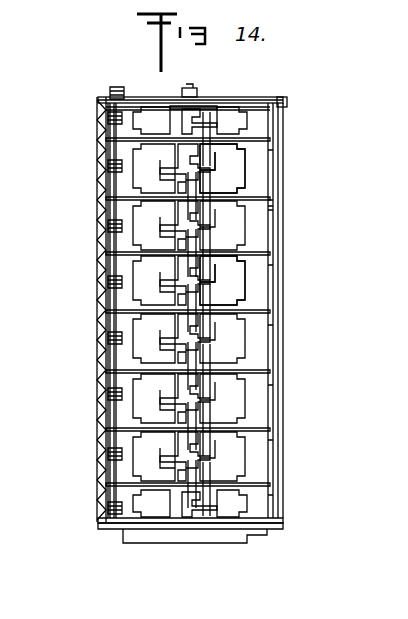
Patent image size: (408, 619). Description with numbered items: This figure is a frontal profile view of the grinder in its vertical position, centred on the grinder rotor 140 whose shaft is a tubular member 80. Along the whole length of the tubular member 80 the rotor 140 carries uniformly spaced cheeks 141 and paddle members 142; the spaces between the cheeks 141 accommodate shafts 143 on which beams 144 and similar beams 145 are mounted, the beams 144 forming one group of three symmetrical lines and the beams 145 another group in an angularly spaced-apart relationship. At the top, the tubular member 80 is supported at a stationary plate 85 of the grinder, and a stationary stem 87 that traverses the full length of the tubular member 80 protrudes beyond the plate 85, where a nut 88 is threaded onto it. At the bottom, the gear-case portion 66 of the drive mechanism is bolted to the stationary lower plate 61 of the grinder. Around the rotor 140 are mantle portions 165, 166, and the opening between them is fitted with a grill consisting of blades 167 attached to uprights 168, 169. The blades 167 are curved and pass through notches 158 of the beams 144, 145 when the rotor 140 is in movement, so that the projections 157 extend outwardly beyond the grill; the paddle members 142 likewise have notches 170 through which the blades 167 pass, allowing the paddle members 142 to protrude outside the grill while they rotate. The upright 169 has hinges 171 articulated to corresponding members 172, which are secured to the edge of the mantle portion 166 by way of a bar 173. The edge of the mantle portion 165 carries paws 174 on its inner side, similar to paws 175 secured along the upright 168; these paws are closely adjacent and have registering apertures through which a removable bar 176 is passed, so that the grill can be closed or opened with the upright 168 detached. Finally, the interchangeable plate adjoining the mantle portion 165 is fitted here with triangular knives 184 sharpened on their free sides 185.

The grinder rotor 140 is at (273, 86).
The stationary plate 85 is at (137, 97).
The stationary stem 87 is at (195, 94).
The nut 88 is at (210, 87).
The paws 174 is at (105, 290).
The triangular knives 184 is at (97, 326).
The paws 175 is at (104, 108).
The removable bar 176 is at (116, 88).
The upright 168 is at (110, 398).
The bar 173 is at (287, 100).
The hinges 171 is at (283, 122).
The members 172 is at (288, 115).
The upright 169 is at (271, 203).
The mantle portion 165 is at (125, 180).
The blades 167 is at (262, 253).
The paddle members 142 is at (160, 163).
The notches 170 is at (262, 185).
The cheeks 141 is at (198, 232).
The tubular member 80 is at (172, 258).
The shafts 143 is at (226, 305).
The mantle portion 166 is at (262, 278).
The notches 158 is at (182, 358).
The beams 144 is at (175, 384).
The beams 145 is at (154, 441).
The projections 157 is at (158, 504).
The stationary lower plate 61 is at (248, 520).
The free sides 185 is at (97, 527).
The gear-case portion 66 is at (175, 538).